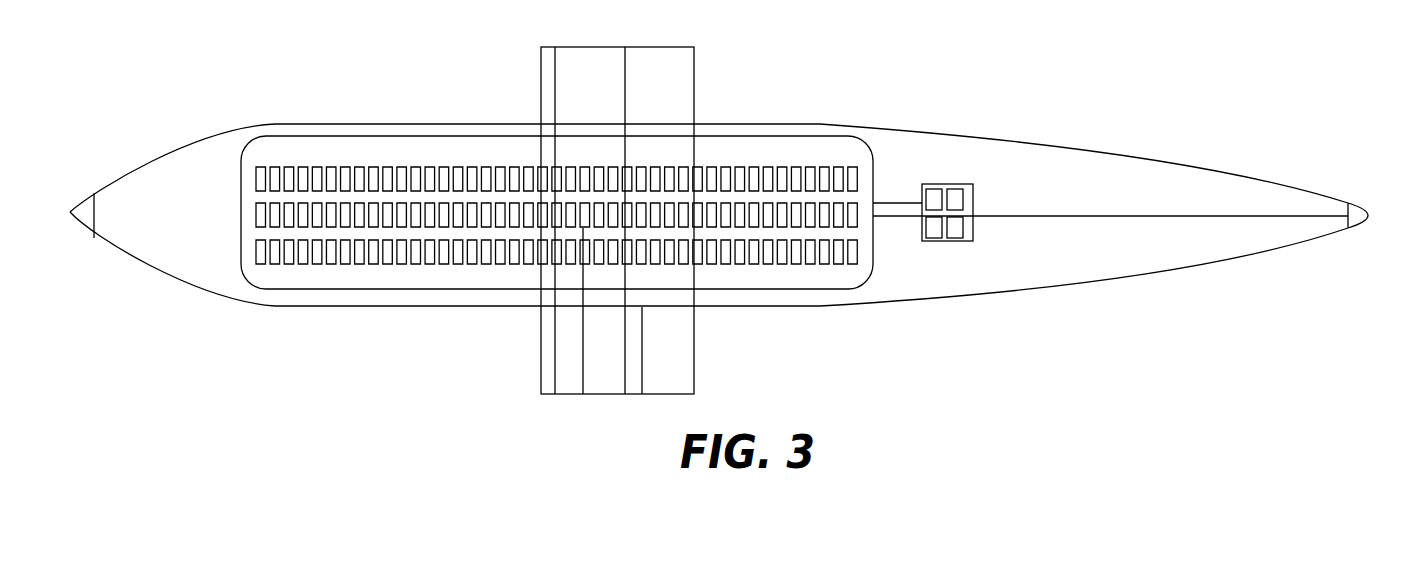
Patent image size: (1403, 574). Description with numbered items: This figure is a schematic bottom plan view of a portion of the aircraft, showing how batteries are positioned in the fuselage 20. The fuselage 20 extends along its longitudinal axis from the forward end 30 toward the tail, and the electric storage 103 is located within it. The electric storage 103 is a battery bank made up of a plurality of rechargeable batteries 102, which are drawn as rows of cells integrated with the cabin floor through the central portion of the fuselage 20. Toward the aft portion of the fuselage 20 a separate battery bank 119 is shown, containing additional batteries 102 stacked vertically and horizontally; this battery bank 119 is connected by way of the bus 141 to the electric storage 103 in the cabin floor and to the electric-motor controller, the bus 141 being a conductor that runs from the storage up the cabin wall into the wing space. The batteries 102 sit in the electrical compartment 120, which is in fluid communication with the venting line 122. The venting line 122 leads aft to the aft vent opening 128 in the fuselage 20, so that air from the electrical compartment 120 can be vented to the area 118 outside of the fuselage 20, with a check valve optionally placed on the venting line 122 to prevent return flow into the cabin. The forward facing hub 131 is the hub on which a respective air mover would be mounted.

The fuselage 20 is at (719, 220).
The forward end 30 is at (70, 212).
The batteries 102 is at (395, 167).
The electric storage 103 is at (357, 158).
The area outside of the fuselage 118 is at (1192, 311).
The battery bank 119 is at (950, 185).
The electrical compartment 120 is at (728, 128).
The venting line 122 is at (988, 215).
The aft vent opening 128 is at (1350, 205).
The forward facing hub 131 is at (910, 250).
The bus 141 is at (905, 200).